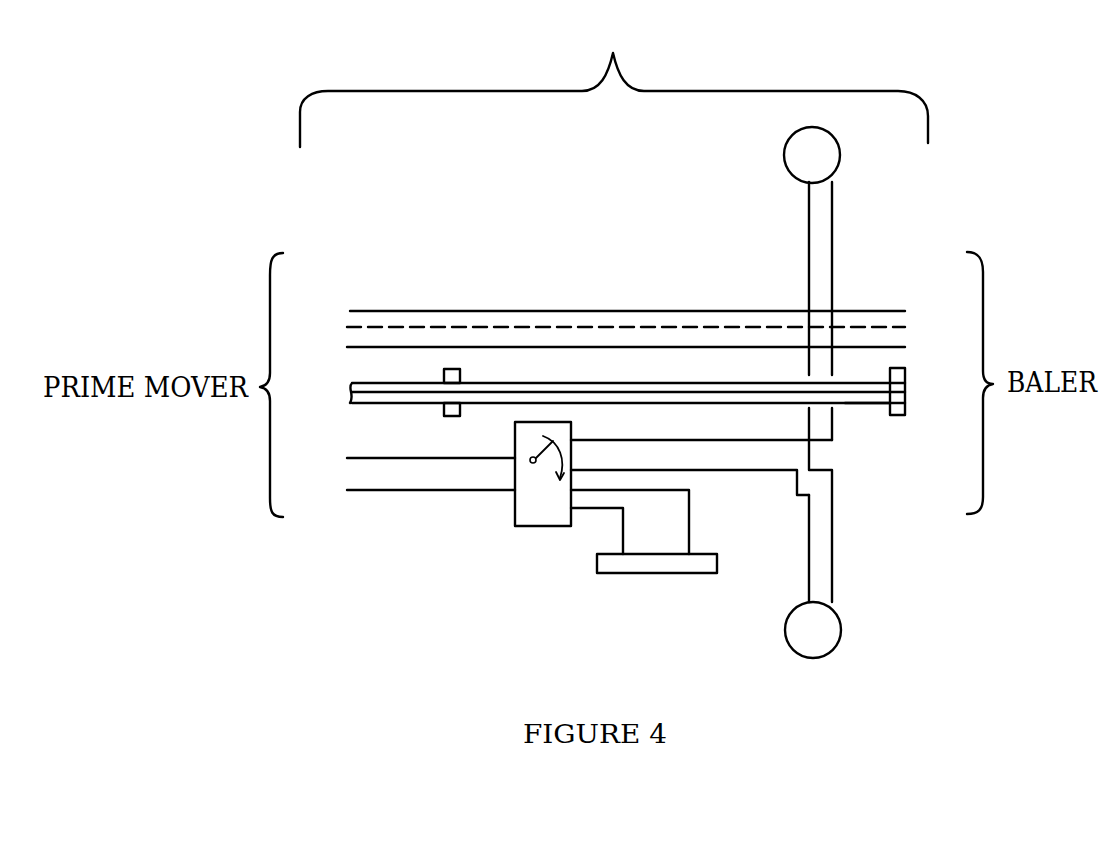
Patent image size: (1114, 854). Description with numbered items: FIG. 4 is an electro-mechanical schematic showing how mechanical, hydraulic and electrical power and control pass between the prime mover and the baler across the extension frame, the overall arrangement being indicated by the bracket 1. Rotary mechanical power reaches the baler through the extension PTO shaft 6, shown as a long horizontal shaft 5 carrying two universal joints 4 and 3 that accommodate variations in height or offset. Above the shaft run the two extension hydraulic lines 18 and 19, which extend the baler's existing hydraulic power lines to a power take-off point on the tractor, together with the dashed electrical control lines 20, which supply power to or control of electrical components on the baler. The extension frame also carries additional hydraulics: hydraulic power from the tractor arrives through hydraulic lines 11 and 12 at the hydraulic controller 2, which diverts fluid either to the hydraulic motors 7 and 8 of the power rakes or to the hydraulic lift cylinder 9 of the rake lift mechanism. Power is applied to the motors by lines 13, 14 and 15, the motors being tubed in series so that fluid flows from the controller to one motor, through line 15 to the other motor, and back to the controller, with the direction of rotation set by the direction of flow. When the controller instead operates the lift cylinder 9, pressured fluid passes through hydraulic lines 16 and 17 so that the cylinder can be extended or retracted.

The prime mover and baler combination 1 is at (614, 82).
The hydraulic controller 2 is at (548, 511).
The universal joint 3 is at (893, 417).
The universal joint 4 is at (453, 416).
The power take-off drive shaft 5 is at (402, 404).
The extension PTO shaft 6 is at (848, 404).
The hydraulic motor 7 is at (840, 150).
The hydraulic motor 8 is at (838, 643).
The hydraulic lift cylinder 9 is at (660, 573).
The hydraulic line 11 is at (397, 497).
The hydraulic line 12 is at (357, 462).
The hydraulic line 13 is at (740, 472).
The hydraulic line 14 is at (837, 443).
The hydraulic line 15 is at (838, 520).
The hydraulic line 16 is at (690, 500).
The hydraulic line 17 is at (603, 511).
The extension hydraulic line 18 is at (403, 311).
The extension hydraulic line 19 is at (513, 347).
The electrical control lines 20 is at (348, 327).